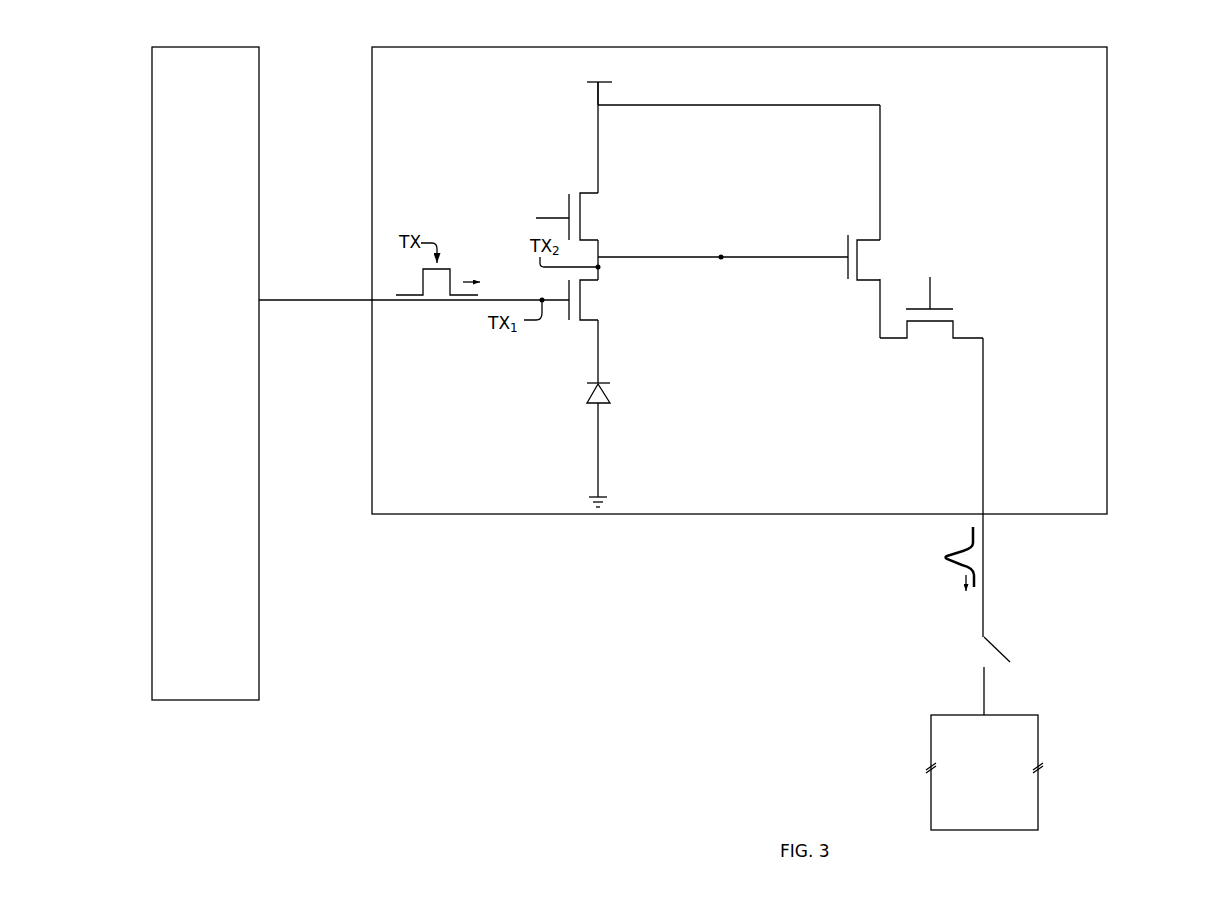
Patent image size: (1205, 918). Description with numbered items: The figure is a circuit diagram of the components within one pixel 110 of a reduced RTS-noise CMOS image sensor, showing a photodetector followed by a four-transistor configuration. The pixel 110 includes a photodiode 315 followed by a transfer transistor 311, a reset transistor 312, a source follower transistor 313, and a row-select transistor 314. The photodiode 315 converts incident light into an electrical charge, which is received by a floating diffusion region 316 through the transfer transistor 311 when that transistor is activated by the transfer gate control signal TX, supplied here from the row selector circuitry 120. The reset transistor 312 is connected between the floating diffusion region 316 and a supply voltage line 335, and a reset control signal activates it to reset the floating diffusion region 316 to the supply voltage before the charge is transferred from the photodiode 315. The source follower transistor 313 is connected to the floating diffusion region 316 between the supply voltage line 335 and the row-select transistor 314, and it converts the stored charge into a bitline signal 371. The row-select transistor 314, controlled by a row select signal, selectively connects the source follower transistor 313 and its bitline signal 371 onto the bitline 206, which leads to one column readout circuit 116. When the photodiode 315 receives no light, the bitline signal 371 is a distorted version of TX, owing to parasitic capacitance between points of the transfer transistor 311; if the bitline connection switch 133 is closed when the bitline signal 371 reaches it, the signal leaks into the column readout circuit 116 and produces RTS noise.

The pixel 110 is at (462, 77).
The row selector circuitry 120 is at (190, 418).
The column readout circuit 116 is at (968, 820).
The supply voltage line 335 is at (597, 95).
The reset transistor 312 is at (552, 202).
The transfer transistor 311 is at (607, 302).
The photodiode 315 is at (578, 393).
The floating diffusion region 316 is at (721, 257).
The source follower transistor 313 is at (852, 229).
The row-select transistor 314 is at (960, 316).
The bitline 206 is at (984, 529).
The bitline signal 371 is at (937, 551).
The bitline connection switch 133 is at (968, 648).